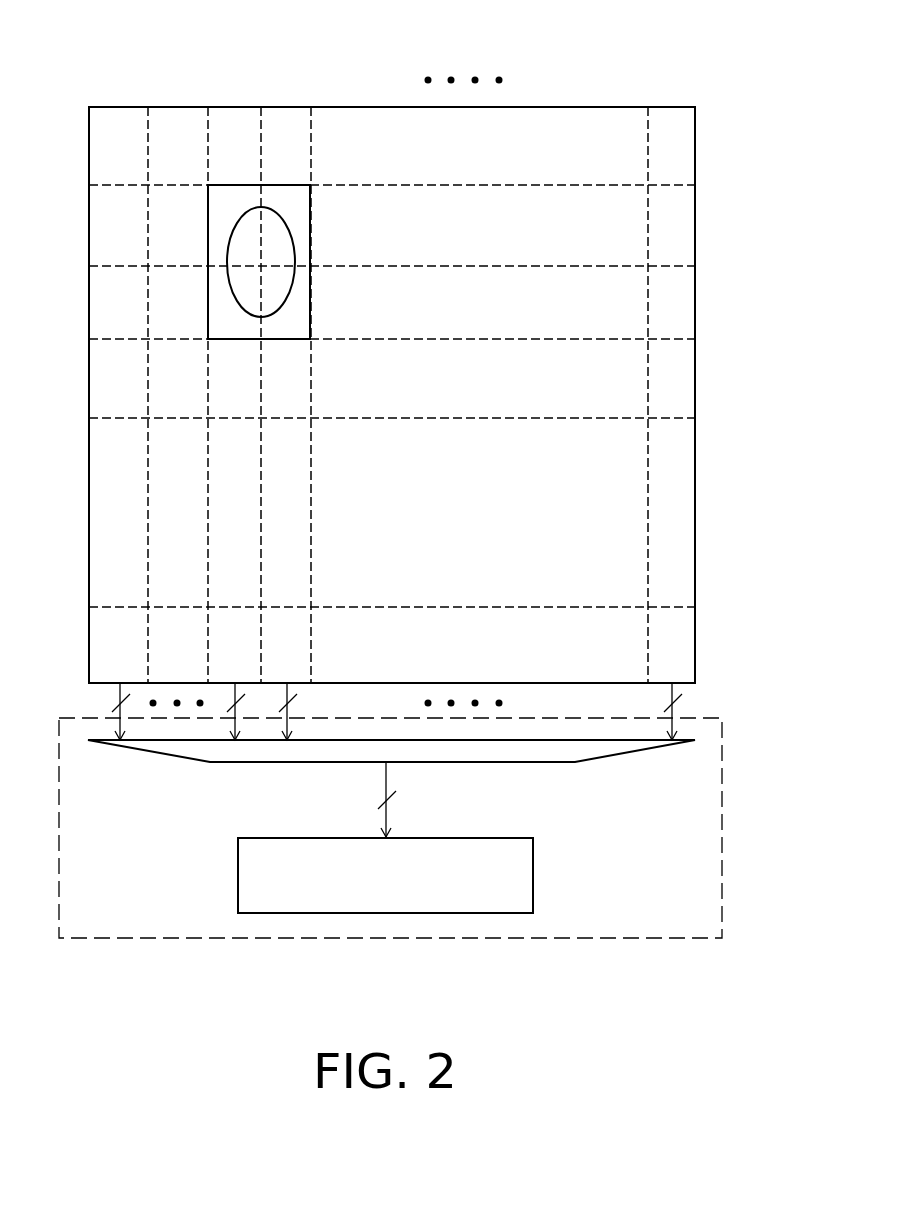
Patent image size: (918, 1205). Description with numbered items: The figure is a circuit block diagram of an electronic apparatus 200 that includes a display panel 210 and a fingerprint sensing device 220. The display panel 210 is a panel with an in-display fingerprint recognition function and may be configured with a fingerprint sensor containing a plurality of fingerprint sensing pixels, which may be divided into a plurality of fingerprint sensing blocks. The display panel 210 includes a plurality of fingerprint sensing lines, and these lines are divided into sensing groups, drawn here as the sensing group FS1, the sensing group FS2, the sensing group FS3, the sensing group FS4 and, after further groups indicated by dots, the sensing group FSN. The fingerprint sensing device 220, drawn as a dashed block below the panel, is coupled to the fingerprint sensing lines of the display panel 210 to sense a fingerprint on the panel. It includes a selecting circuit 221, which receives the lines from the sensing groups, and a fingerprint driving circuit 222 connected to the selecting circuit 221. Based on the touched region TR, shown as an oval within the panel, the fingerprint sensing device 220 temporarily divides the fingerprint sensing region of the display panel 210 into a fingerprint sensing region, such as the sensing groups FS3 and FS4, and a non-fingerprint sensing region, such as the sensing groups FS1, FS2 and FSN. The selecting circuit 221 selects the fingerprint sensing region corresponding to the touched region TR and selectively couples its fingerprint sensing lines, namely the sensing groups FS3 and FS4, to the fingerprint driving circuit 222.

The electronic apparatus 200 is at (643, 975).
The display panel 210 is at (695, 503).
The fingerprint sensing device 220 is at (722, 825).
The selecting circuit 221 is at (622, 753).
The fingerprint driving circuit 222 is at (533, 876).
The touched region TR is at (285, 219).
The sensing group FS1 is at (148, 102).
The sensing group FS2 is at (208, 102).
The sensing group FS3 is at (261, 102).
The sensing group FS4 is at (311, 102).
The sensing group FSN is at (695, 102).